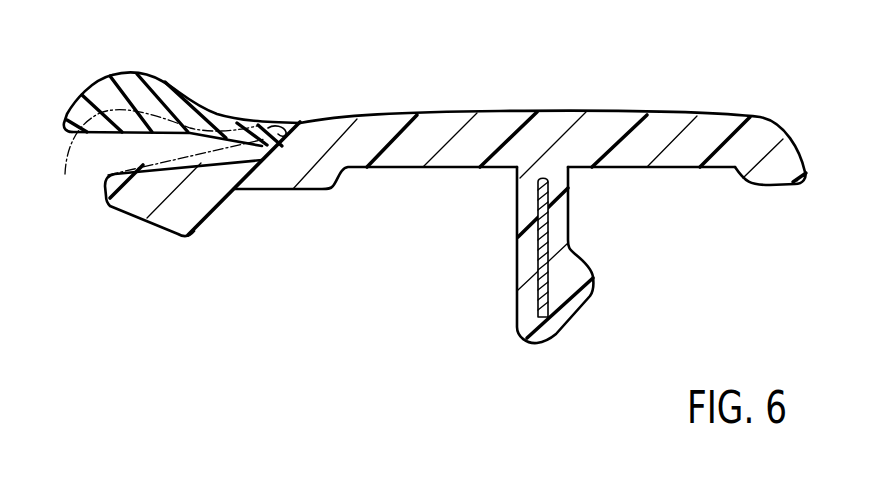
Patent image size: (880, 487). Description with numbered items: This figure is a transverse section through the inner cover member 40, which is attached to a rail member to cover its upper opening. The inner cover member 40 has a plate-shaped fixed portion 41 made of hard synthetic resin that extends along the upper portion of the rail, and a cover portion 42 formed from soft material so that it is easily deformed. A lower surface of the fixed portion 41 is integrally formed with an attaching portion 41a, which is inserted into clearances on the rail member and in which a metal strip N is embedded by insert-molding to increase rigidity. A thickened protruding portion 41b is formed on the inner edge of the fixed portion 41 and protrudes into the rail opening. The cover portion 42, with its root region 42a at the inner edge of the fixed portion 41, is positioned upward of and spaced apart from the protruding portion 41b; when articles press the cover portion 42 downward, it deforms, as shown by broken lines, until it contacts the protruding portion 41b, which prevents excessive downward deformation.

The inner cover member 40 is at (639, 81).
The fixed portion 41 is at (483, 133).
The attaching portion 41a is at (580, 295).
The protruding portion 41b is at (189, 203).
The cover portion 42 is at (103, 143).
The lip base 42a is at (271, 127).
The metal strip N is at (546, 241).